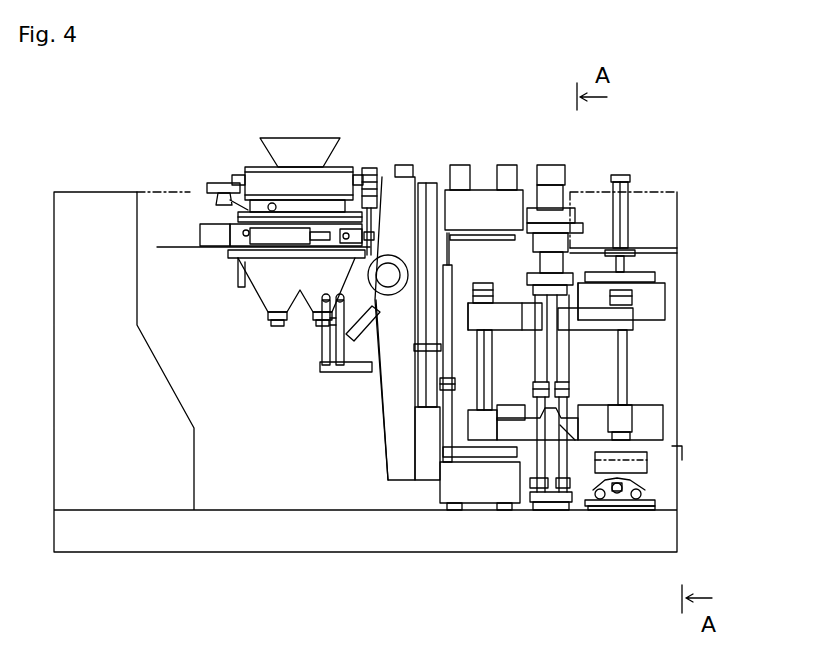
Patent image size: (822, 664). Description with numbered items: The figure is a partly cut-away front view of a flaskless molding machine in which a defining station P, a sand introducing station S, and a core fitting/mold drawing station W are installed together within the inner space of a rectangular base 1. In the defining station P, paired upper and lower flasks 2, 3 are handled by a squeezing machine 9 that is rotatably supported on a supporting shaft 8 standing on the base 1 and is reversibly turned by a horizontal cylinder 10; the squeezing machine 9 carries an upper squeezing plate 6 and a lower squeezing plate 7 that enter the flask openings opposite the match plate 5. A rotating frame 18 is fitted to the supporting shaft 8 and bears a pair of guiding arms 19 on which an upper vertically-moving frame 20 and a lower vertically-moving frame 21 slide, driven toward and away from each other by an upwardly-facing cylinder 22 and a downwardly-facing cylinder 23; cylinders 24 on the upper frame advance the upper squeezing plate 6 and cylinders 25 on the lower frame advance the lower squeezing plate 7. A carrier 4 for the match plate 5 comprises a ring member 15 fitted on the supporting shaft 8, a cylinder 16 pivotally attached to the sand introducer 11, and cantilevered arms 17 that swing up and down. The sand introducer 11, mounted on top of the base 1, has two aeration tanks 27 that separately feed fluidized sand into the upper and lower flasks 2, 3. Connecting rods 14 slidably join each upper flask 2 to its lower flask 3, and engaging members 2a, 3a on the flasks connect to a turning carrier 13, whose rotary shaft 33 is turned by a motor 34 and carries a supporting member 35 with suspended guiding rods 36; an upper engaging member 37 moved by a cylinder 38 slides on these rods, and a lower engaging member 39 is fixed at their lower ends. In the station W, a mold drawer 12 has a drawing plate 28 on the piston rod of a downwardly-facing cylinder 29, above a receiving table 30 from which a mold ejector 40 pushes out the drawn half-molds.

The base 1 is at (110, 192).
The upper flask 2 is at (487, 283).
The engaging member 2a is at (476, 307).
The lower flask 3 is at (510, 405).
The engaging member 3a is at (515, 425).
The carrier 4 is at (393, 168).
The match plate 5 is at (360, 375).
The upper squeezing plate 6 is at (470, 243).
The lower squeezing plate 7 is at (460, 450).
The supporting shaft 8 is at (392, 255).
The squeezing machine 9 is at (429, 172).
The horizontal cylinder 10 is at (215, 235).
The sand introducer 11 is at (241, 152).
The mold drawer 12 is at (653, 174).
The turning carrier 13 is at (587, 180).
The connecting rods 14 is at (487, 345).
The ring member 15 is at (390, 295).
The cylinder 16 is at (365, 165).
The cantilevered arms 17 is at (320, 358).
The rotating frame 18 is at (388, 458).
The guiding arms 19 is at (425, 385).
The upper vertically-moving frame 20 is at (480, 195).
The lower vertically-moving frame 21 is at (488, 490).
The upwardly-facing cylinder 22 is at (447, 361).
The downwardly-facing cylinder 23 is at (447, 418).
The cylinders 24 is at (462, 152).
The cylinders 25 is at (462, 507).
The aeration tanks 27 is at (267, 302).
The drawing plate 28 is at (655, 275).
The downwardly-facing cylinder 29 is at (625, 220).
The receiving table 30 is at (657, 502).
The rotary shaft 33 is at (553, 265).
The motor 34 is at (548, 170).
The supporting member 35 is at (595, 320).
The guiding rods 36 is at (572, 362).
The upper engaging member 37 is at (505, 295).
The cylinder 38 is at (541, 472).
The lower engaging member 39 is at (560, 437).
The mold ejector 40 is at (657, 484).
The sand introducing station S is at (311, 122).
The defining station P is at (477, 103).
The core fitting/mold drawing station W is at (698, 179).